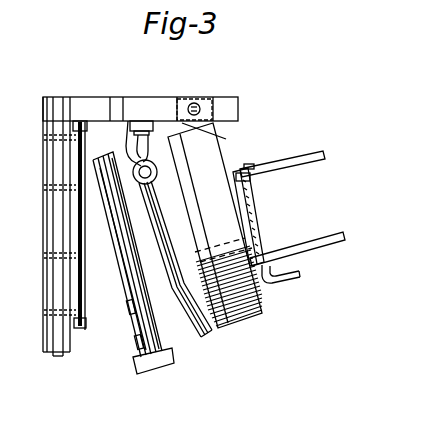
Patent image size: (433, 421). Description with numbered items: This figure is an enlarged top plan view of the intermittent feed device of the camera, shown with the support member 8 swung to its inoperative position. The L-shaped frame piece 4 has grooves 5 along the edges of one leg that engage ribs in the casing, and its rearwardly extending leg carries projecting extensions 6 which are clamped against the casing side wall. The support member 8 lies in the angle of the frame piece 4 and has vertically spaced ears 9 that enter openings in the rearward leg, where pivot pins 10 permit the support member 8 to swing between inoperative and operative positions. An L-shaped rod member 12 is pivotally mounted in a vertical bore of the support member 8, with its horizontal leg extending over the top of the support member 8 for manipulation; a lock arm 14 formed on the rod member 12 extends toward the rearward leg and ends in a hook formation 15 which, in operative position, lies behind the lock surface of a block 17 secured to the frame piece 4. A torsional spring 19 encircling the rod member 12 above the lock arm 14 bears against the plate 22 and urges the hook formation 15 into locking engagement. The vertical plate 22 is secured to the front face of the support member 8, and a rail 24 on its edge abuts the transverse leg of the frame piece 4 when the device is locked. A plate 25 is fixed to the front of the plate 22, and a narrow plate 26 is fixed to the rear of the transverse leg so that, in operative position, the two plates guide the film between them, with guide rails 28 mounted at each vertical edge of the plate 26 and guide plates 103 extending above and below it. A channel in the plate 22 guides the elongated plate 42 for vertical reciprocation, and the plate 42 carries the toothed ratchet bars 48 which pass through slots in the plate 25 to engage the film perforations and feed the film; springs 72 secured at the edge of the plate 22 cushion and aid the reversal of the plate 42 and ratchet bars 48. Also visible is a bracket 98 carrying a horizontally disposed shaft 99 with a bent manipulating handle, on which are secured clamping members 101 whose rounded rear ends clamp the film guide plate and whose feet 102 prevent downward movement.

The frame piece 4 is at (43, 200).
The grooves 5 is at (58, 99).
The extensions 6 is at (123, 101).
The support member 8 is at (234, 328).
The ears 9 is at (212, 128).
The pivot pins 10 is at (196, 99).
The rod member 12 is at (193, 333).
The lock arm 14 is at (115, 137).
The hook formation 15 is at (144, 133).
The block 17 is at (150, 116).
The torsional spring 19 is at (104, 140).
The plate 22 is at (173, 336).
The rail 24 is at (146, 371).
The plate 25 is at (138, 318).
The plate 26 is at (52, 265).
The guide rails 28 is at (80, 122).
The plate 42 is at (122, 236).
The ratchet bars 48 is at (138, 349).
The springs 72 is at (138, 282).
The bracket 98 is at (250, 167).
The shaft 99 is at (263, 222).
The clamping members 101 is at (298, 157).
The feet 102 is at (256, 178).
The guide plates 103 is at (76, 152).